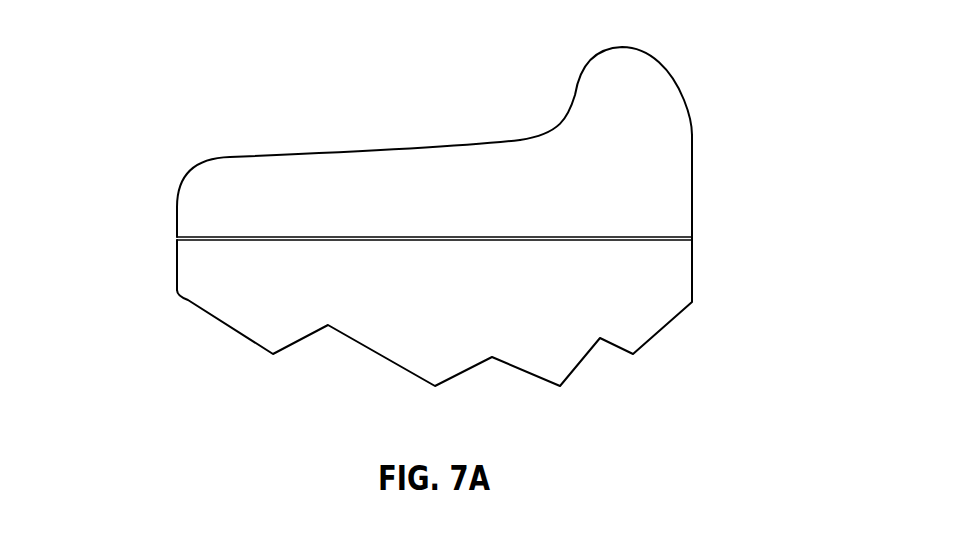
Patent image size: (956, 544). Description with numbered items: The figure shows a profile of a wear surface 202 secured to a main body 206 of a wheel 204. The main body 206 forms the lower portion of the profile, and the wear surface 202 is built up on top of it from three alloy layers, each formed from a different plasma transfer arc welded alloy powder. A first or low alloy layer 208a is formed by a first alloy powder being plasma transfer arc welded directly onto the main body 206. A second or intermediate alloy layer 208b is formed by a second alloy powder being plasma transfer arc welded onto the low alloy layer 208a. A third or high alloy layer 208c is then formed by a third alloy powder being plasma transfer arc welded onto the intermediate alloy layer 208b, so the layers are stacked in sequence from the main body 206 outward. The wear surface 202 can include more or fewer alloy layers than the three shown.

The wear surface 202 is at (436, 208).
The wheel 204 is at (158, 285).
The main body 206 is at (677, 271).
The low alloy layer 208a is at (682, 227).
The intermediate alloy layer 208b is at (693, 178).
The high alloy layer 208c is at (688, 108).